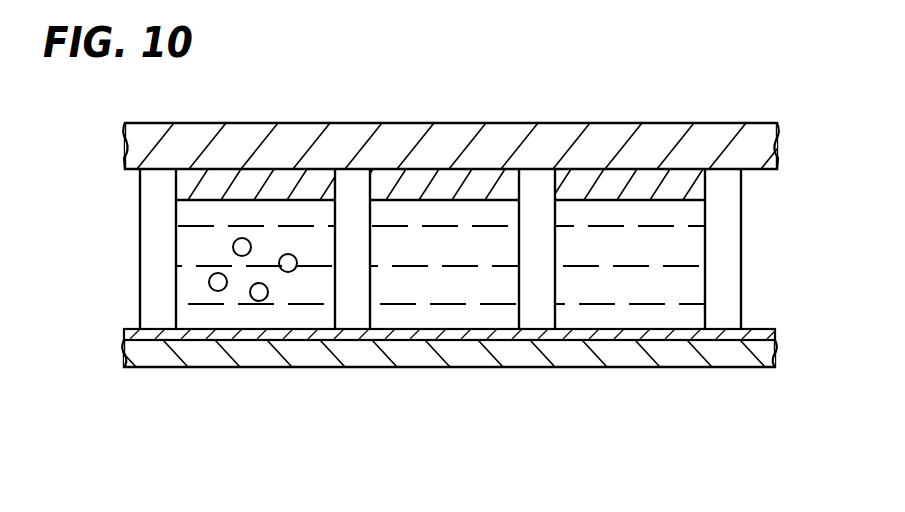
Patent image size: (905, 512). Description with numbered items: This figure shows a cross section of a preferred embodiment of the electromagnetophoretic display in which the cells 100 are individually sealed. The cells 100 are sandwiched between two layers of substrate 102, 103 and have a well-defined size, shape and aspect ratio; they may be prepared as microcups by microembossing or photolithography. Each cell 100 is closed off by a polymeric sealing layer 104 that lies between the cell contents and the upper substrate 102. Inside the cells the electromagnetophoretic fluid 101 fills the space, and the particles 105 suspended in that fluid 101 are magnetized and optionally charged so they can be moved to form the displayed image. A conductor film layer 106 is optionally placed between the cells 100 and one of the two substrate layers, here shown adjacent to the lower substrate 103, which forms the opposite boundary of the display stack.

The cells 100 is at (665, 237).
The electromagnetophoretic fluid 101 is at (267, 230).
The substrate 102 is at (450, 143).
The substrate 103 is at (462, 355).
The polymeric sealing layer 104 is at (217, 183).
The particles 105 is at (258, 303).
The conductor film layer 106 is at (746, 333).